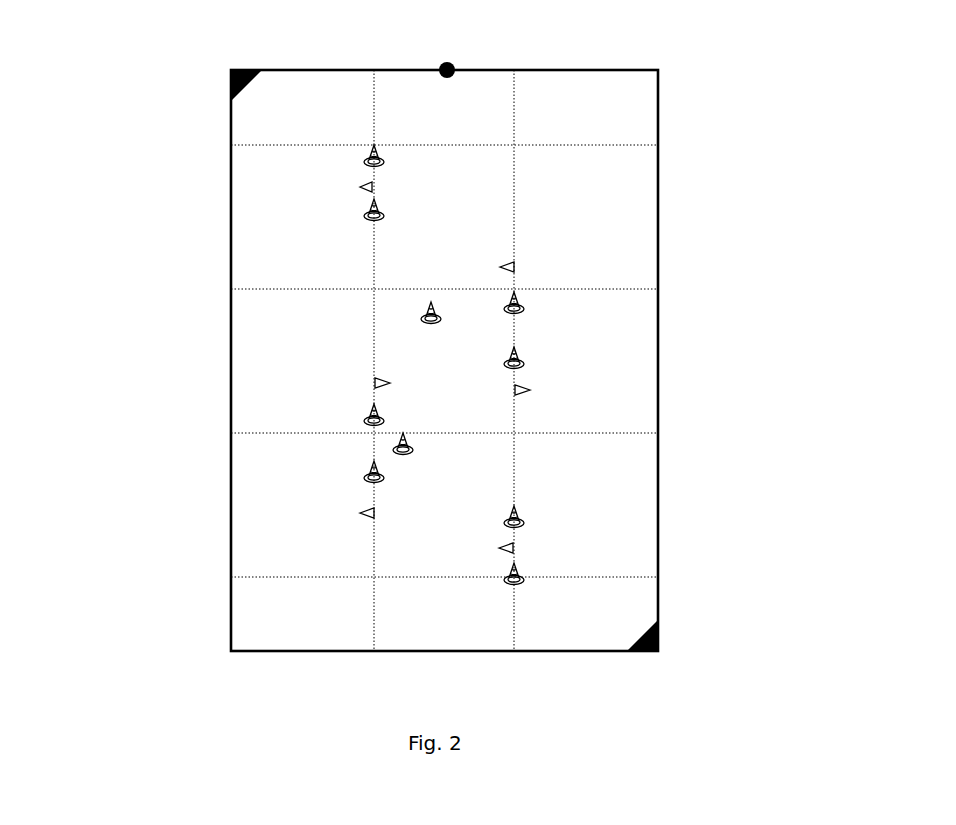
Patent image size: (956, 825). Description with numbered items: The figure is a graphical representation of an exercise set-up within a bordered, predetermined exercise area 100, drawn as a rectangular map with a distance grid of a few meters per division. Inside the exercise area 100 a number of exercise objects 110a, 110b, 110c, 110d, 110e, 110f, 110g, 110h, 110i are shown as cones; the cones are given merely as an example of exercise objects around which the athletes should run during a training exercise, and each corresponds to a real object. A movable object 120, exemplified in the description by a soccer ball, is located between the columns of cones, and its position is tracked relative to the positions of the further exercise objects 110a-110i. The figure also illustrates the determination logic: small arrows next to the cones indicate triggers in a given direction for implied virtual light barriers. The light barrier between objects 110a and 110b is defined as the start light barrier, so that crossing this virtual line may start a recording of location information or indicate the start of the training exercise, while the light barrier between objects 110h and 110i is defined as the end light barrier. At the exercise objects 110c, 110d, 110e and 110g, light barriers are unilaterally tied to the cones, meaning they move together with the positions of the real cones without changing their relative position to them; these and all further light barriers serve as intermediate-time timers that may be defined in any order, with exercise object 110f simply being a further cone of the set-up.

The exercise area 100 is at (508, 70).
The movable object 120 is at (431, 303).
The exercise object 110a is at (522, 520).
The exercise object 110b is at (522, 576).
The exercise object 110c is at (522, 358).
The exercise object 110d is at (522, 304).
The exercise object 110e is at (365, 478).
The exercise object 110f is at (395, 448).
The exercise object 110g is at (365, 414).
The exercise object 110h is at (365, 216).
The exercise object 110i is at (365, 160).